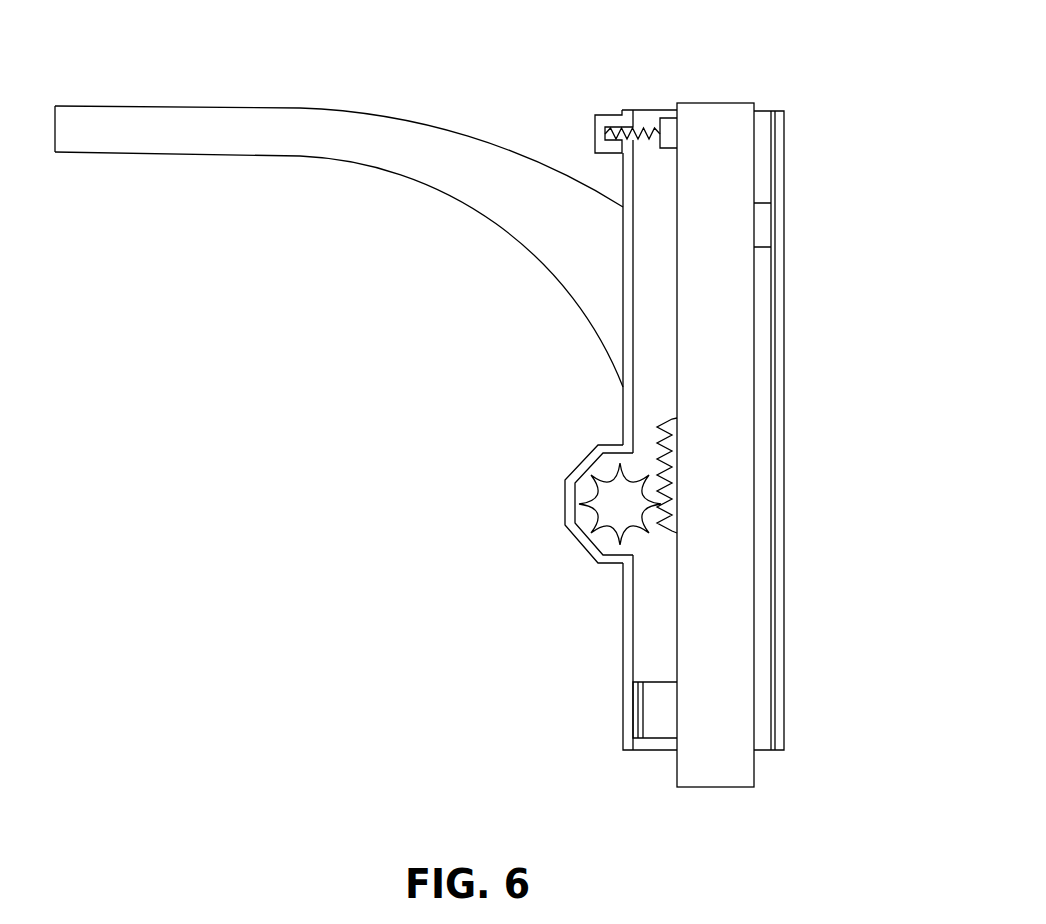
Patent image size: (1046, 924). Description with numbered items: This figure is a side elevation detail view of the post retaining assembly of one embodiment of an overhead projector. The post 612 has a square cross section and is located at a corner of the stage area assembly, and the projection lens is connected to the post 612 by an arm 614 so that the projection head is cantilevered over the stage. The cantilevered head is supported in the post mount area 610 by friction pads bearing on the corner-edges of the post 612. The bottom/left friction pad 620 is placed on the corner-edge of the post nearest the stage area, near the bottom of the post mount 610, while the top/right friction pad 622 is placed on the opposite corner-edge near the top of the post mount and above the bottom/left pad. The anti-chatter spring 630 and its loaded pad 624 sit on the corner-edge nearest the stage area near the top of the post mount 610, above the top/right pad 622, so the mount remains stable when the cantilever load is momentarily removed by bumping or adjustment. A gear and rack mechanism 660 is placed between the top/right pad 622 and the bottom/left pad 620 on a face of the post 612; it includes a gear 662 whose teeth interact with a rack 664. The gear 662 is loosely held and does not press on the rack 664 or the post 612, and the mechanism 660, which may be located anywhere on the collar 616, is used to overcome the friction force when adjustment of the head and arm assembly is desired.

The post mount area 610 is at (298, 388).
The post 612 is at (740, 113).
The arm 614 is at (190, 152).
The collar 616 is at (784, 527).
The bottom/left friction pad 620 is at (660, 722).
The top/right friction pad 622 is at (760, 210).
The loaded pad 624 is at (666, 125).
The anti-chatter spring 630 is at (633, 128).
The gear and rack mechanism 660 is at (553, 457).
The gear 662 is at (613, 522).
The rack 664 is at (670, 420).